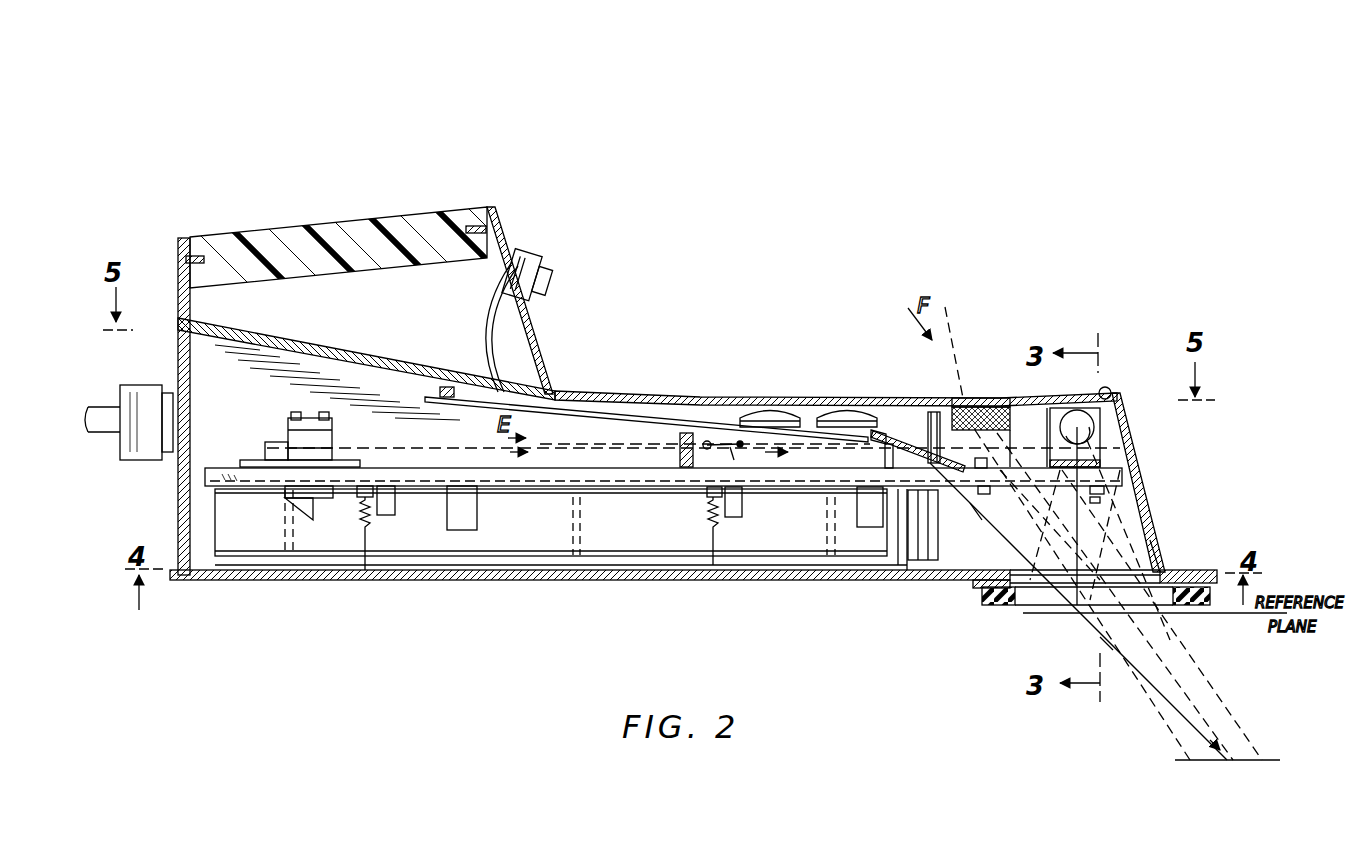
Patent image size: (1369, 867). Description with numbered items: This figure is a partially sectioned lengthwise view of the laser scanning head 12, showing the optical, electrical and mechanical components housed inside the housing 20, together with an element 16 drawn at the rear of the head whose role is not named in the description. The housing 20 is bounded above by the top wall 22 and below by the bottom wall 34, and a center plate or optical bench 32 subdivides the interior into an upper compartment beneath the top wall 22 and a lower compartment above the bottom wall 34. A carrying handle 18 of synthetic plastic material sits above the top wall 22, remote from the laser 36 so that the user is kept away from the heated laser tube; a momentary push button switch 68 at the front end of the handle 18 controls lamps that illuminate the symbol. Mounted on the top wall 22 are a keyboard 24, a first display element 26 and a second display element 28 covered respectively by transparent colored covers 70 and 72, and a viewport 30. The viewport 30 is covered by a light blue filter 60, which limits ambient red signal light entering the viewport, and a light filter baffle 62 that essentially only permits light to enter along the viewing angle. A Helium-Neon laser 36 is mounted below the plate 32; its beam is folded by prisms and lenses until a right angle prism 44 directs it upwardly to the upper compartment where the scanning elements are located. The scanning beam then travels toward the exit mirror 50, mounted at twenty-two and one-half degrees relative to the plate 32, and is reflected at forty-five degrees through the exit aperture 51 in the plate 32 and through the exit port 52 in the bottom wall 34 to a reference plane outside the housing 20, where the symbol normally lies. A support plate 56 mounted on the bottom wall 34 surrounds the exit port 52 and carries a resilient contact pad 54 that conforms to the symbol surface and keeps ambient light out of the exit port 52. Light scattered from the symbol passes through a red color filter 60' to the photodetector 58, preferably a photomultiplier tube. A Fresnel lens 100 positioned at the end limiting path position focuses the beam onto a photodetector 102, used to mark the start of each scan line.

The scanning head 12 is at (638, 323).
The adjustment knob 16 is at (101, 416).
The carrying handle 18 is at (343, 220).
The housing 20 is at (1155, 465).
The top wall 22 is at (720, 422).
The keyboard 24 is at (630, 385).
The first display element 26 is at (872, 430).
The second display element 28 is at (740, 422).
The viewport 30 is at (966, 397).
The center plate 32 is at (218, 467).
The bottom wall 34 is at (510, 580).
The laser 36 is at (627, 547).
The right angle prism 44 is at (313, 503).
The exit mirror 50 is at (927, 437).
The exit aperture 51 is at (950, 482).
The exit port 52 is at (1153, 548).
The resilient contact pad 54 is at (1198, 606).
The support plate 56 is at (1187, 573).
The photodetector 58 is at (1112, 395).
The light blue filter 60 is at (981, 398).
The red color filter 60' is at (1107, 505).
The light filter baffle 62 is at (1010, 425).
The momentary push button switch 68 is at (577, 222).
The transparent colored cover 70 is at (847, 402).
The transparent colored cover 72 is at (787, 402).
The Fresnel lens 100 is at (678, 445).
The photodetector 102 is at (730, 447).